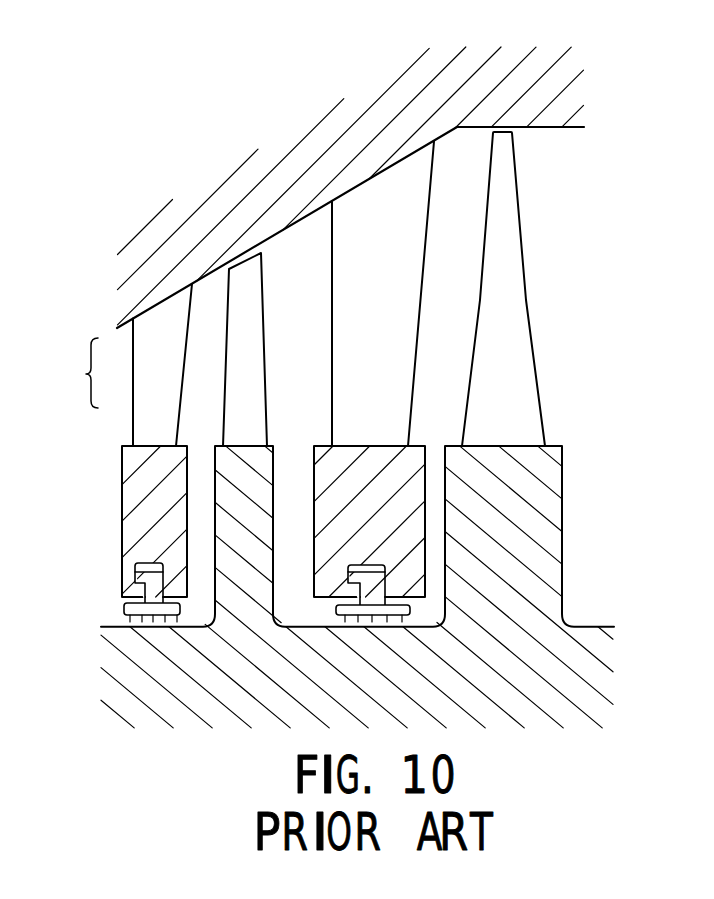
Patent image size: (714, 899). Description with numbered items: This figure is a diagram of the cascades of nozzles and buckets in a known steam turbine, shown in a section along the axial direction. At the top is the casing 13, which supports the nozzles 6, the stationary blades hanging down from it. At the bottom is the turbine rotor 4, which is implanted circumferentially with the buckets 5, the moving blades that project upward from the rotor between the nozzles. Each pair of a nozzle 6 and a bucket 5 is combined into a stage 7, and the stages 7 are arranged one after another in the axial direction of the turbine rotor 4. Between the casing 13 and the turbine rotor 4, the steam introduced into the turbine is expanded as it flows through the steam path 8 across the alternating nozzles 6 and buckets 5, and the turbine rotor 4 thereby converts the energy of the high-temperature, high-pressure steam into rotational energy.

The turbine rotor 4 is at (540, 571).
The buckets 5 is at (243, 391).
The nozzles 6 is at (146, 358).
The stages 7 is at (83, 373).
The steam path 8 is at (455, 346).
The casing 13 is at (556, 82).